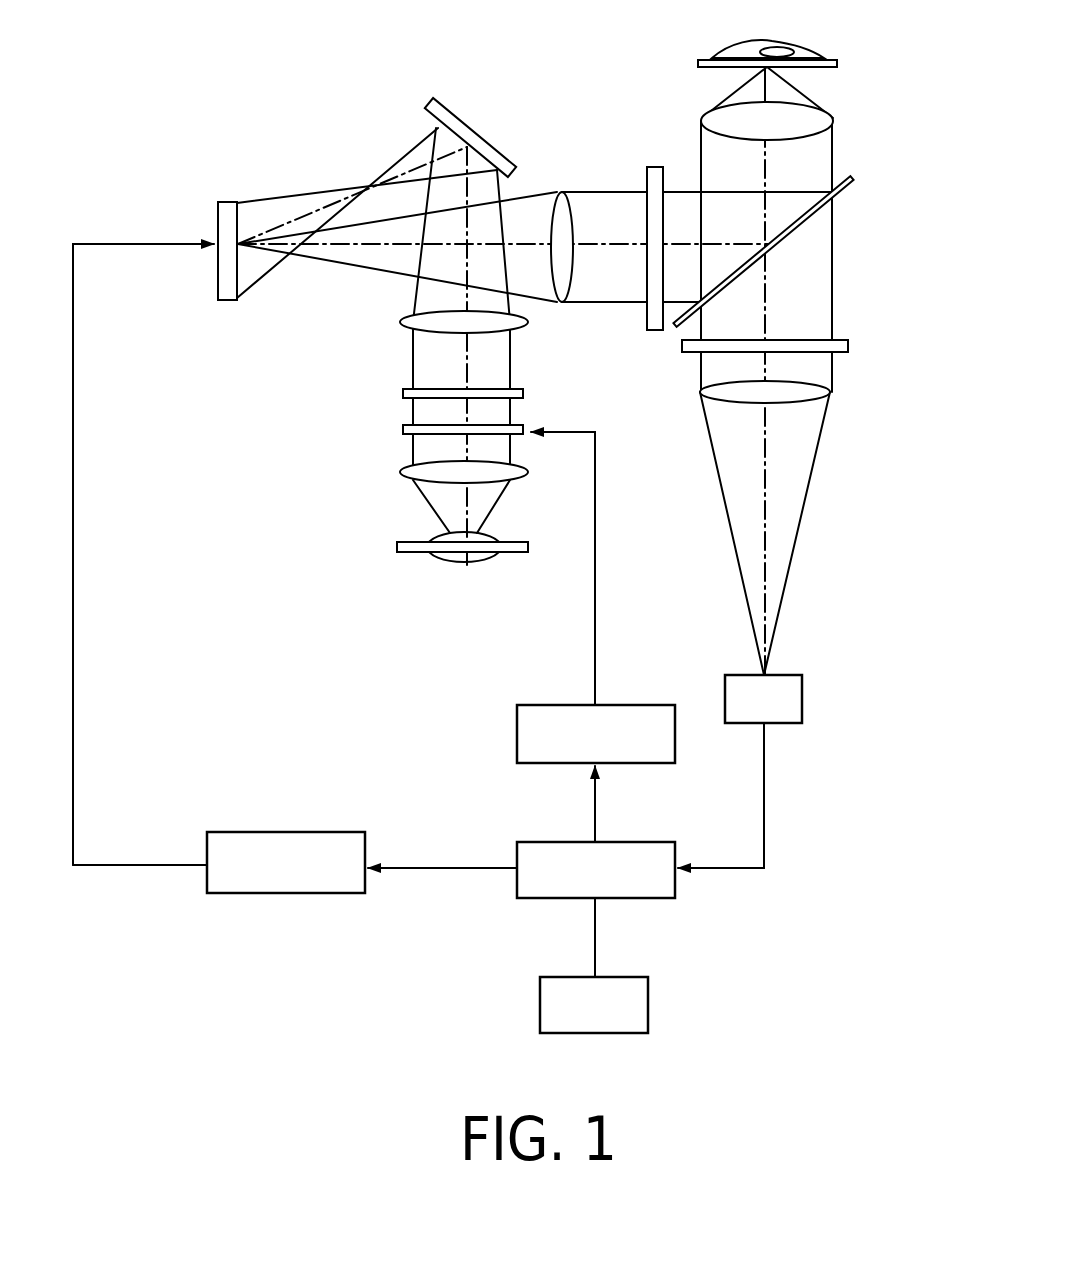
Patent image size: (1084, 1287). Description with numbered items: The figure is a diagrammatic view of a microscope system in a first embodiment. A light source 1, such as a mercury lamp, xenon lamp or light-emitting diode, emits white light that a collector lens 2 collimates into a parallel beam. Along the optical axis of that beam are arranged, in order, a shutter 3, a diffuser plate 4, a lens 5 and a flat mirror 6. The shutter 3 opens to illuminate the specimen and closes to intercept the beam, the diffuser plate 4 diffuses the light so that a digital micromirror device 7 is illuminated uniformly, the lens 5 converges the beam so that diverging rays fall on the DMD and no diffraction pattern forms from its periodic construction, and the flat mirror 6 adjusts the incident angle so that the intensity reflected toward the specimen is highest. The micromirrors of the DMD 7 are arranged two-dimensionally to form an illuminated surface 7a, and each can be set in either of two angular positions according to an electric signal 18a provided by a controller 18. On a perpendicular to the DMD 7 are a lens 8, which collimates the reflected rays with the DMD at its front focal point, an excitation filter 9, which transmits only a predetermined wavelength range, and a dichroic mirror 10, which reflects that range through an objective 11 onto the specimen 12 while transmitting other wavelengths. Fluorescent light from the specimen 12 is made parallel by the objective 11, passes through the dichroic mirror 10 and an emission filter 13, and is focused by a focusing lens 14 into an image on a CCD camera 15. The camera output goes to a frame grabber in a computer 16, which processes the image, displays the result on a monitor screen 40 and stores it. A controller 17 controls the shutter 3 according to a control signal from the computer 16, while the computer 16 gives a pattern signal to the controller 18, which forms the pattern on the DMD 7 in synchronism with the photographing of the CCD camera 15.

The light source 1 is at (397, 547).
The collector lens 2 is at (400, 472).
The shutter 3 is at (403, 430).
The diffuser plate 4 is at (403, 394).
The lens 5 is at (400, 322).
The flat mirror 6 is at (430, 100).
The digital micromirror device 7 is at (218, 233).
The illuminated surface 7a is at (238, 217).
The lens 8 is at (563, 190).
The excitation filter 9 is at (658, 165).
The dichroic mirror 10 is at (850, 193).
The objective 11 is at (835, 120).
The specimen 12 is at (837, 62).
The emission filter 13 is at (848, 345).
The focusing lens 14 is at (830, 392).
The CCD camera 15 is at (802, 700).
The computer 16 is at (525, 898).
The controller 17 is at (517, 733).
The controller 18 is at (253, 893).
The electric signal 18a is at (73, 648).
The monitor screen 40 is at (648, 1008).